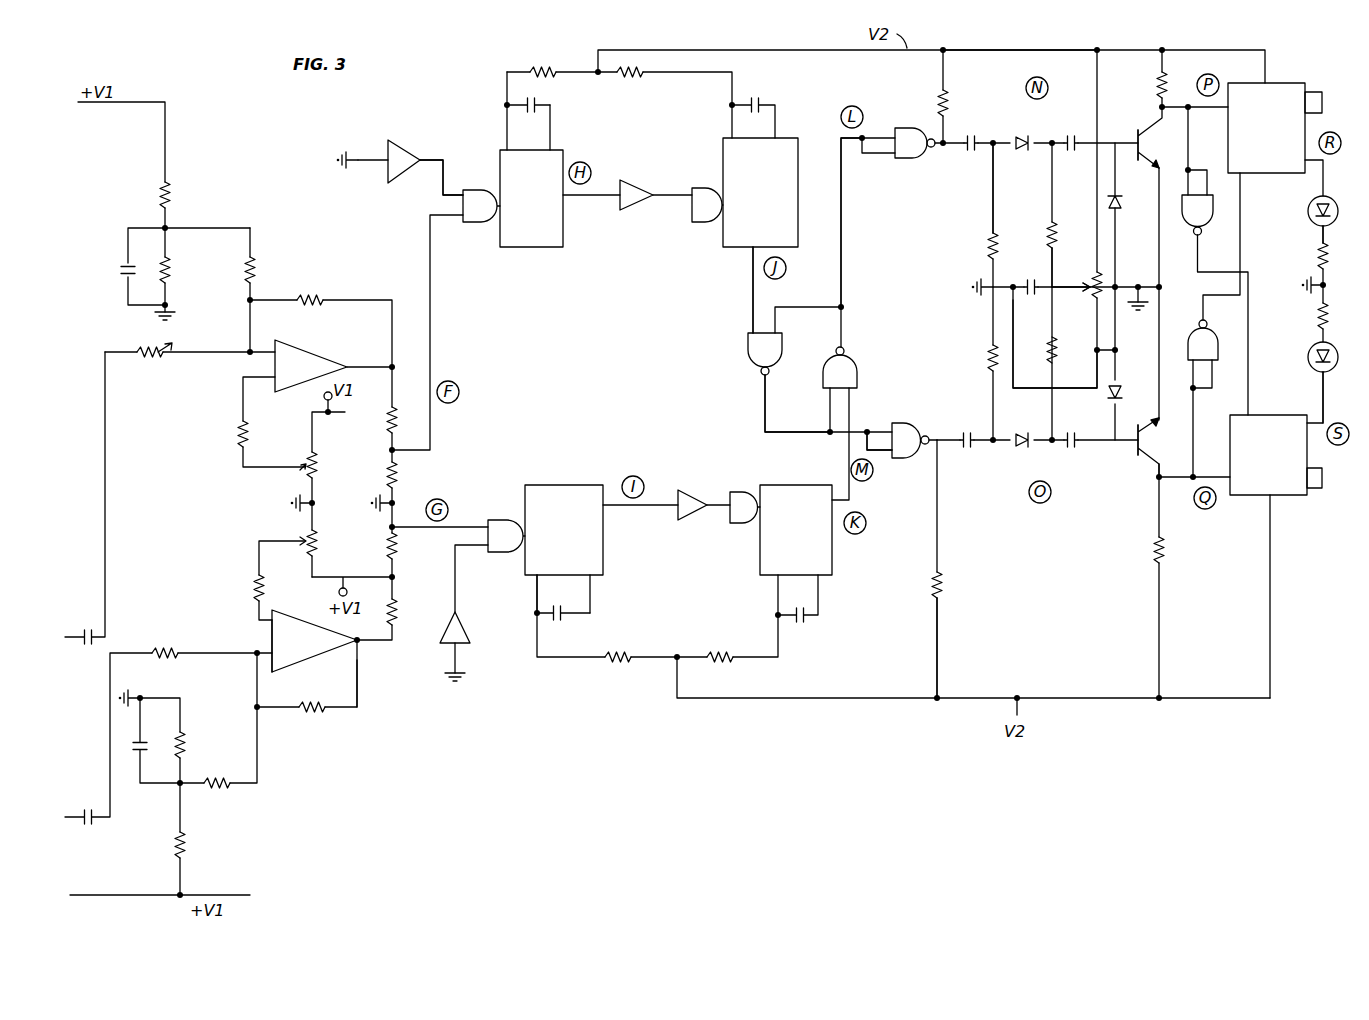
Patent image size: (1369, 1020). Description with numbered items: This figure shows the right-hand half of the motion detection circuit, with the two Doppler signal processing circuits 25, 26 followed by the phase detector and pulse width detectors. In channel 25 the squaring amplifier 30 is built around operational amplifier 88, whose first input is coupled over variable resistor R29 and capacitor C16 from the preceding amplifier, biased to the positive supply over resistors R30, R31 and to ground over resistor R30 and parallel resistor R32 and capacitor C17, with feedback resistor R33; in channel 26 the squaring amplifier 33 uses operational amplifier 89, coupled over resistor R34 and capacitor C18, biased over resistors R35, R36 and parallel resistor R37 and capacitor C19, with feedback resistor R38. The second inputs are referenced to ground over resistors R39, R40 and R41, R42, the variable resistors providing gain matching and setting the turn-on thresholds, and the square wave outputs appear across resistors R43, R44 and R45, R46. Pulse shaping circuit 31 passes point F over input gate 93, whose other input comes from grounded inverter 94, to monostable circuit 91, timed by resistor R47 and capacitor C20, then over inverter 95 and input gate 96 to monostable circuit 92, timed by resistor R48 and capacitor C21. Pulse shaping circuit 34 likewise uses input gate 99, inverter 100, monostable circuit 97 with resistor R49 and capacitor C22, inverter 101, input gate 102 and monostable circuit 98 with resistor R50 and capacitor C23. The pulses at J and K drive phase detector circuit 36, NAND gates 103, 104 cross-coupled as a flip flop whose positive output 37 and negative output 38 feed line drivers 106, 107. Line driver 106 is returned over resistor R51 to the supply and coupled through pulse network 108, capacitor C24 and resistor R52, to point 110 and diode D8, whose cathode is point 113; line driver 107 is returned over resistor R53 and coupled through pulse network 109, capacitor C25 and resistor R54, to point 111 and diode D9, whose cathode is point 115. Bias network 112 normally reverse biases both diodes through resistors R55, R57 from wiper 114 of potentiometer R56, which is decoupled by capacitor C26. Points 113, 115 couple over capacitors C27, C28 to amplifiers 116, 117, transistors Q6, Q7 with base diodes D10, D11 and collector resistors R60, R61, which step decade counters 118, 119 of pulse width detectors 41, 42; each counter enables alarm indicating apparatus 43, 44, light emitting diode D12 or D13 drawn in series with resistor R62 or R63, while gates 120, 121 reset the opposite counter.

The Doppler signal processing circuits 25 is at (412, 111).
The Doppler signal processing circuits 26 is at (395, 753).
The squaring amplifier circuit 30 is at (306, 352).
The pulse shaping circuit 31 is at (608, 255).
The squaring amplifier 33 is at (296, 662).
The pulse shaping circuit 34 is at (606, 470).
The phase detector circuit 36 is at (724, 383).
The positive output 37 is at (841, 286).
The negative output 38 is at (864, 432).
The pulse width detector circuit 41 is at (1078, 91).
The pulse width detector circuit 42 is at (1096, 553).
The alarm indicating apparatus 43 is at (1360, 233).
The alarm indicating apparatus 44 is at (1348, 395).
The operational amplifier 88 is at (311, 366).
The operational amplifier 89 is at (314, 641).
The monostable circuit 91 is at (548, 250).
The monostable circuit 92 is at (733, 226).
The input gate 93 is at (475, 225).
The inverter 94 is at (404, 176).
The inverter 95 is at (640, 181).
The input gate 96 is at (708, 191).
The monostable circuit 97 is at (592, 554).
The monostable circuit 98 is at (758, 536).
The input gate 99 is at (518, 526).
The inverter 100 is at (462, 626).
The inverter 101 is at (702, 486).
The input gate 102 is at (742, 494).
The NAND gate 103 is at (782, 344).
The NAND gate 104 is at (858, 362).
The line driver 106 is at (920, 158).
The line driver 107 is at (906, 464).
The pulse network 108 is at (1036, 199).
The pulse network 109 is at (1045, 345).
The point 110 is at (992, 146).
The point 111 is at (991, 446).
The bias network 112 is at (1092, 243).
The point 113 is at (1054, 146).
The wiper 114 is at (1080, 286).
The point 115 is at (1054, 436).
The amplifier 116 is at (1150, 122).
The amplifier stage 117 is at (1142, 475).
The decade counter 118 is at (1290, 84).
The decade counter 119 is at (1262, 508).
The gate 120 is at (1205, 228).
The gate 121 is at (1210, 336).
The variable resistor R29 is at (166, 361).
The resistor R30 is at (254, 276).
The resistor R31 is at (170, 197).
The resistor R32 is at (170, 270).
The feedback resistor R33 is at (304, 282).
The resistor R34 is at (150, 636).
The resistor R35 is at (222, 788).
The resistor R36 is at (190, 845).
The resistor R37 is at (188, 752).
The feedback resistor R38 is at (306, 714).
The resistor R39 is at (232, 436).
The variable resistor R40 is at (320, 470).
The resistor R41 is at (252, 592).
The variable resistor R42 is at (318, 548).
The resistor R43 is at (404, 428).
The resistor R44 is at (398, 482).
The resistor R45 is at (400, 616).
The resistor R46 is at (404, 544).
The resistor R47 is at (548, 80).
The resistor R48 is at (634, 80).
The resistor R49 is at (614, 655).
The resistor R50 is at (714, 655).
The resistor R51 is at (954, 102).
The resistor R52 is at (986, 250).
The resistor R53 is at (942, 590).
The resistor R54 is at (988, 362).
The resistor R55 is at (1058, 230).
The potentiometer R56 is at (1104, 282).
The resistor R57 is at (1074, 334).
The resistor R60 is at (1154, 88).
The resistor R61 is at (1164, 559).
The resistor R62 is at (1314, 260).
The resistor R63 is at (1314, 316).
The capacitor C16 is at (96, 626).
The capacitor C17 is at (104, 270).
The capacitor C18 is at (97, 806).
The capacitor C19 is at (155, 744).
The capacitor C20 is at (537, 112).
The capacitor C21 is at (758, 102).
The capacitor C22 is at (570, 638).
The capacitor C23 is at (794, 638).
The capacitor C24 is at (976, 138).
The capacitor C25 is at (962, 418).
The capacitor C26 is at (1028, 280).
The capacitor C27 is at (1078, 136).
The capacitor C28 is at (1079, 450).
The diode D8 is at (1048, 138).
The diode D9 is at (1024, 446).
The diode D10 is at (1124, 196).
The diode D11 is at (1126, 390).
The light emitting diode D12 is at (1306, 212).
The light emitting diode D13 is at (1310, 350).
The transistor Q6 is at (1154, 145).
The transistor Q7 is at (1155, 440).